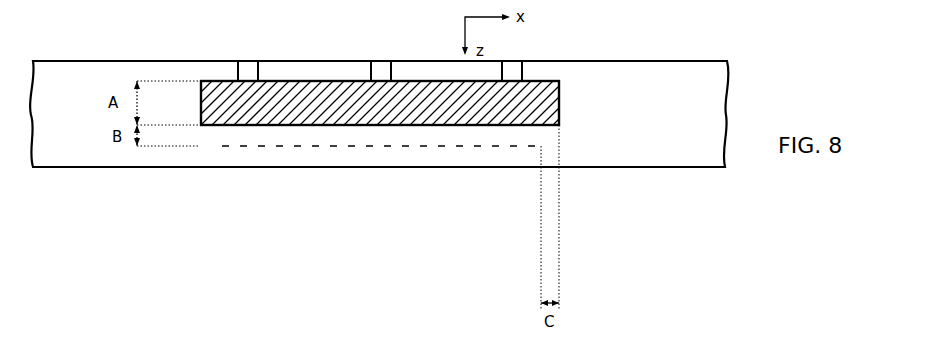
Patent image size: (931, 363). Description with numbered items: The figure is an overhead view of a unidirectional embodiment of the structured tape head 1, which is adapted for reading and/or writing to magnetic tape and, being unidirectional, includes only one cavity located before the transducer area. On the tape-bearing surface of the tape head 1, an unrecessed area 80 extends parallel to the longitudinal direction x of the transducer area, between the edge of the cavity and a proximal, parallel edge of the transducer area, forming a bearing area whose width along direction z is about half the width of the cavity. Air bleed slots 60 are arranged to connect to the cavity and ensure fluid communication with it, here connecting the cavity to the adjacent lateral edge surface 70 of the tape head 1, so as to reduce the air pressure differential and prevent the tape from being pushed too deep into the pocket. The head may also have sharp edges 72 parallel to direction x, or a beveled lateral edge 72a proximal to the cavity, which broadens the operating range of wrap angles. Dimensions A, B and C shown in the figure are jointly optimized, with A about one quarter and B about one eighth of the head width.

The tape head 1 is at (225, 192).
The air bleed slots 60 is at (503, 78).
The lateral edge surface 70 is at (379, 96).
The sharp edges 72 is at (379, 114).
The beveled lateral edge 72a is at (559, 60).
The unrecessed area 80 is at (228, 137).